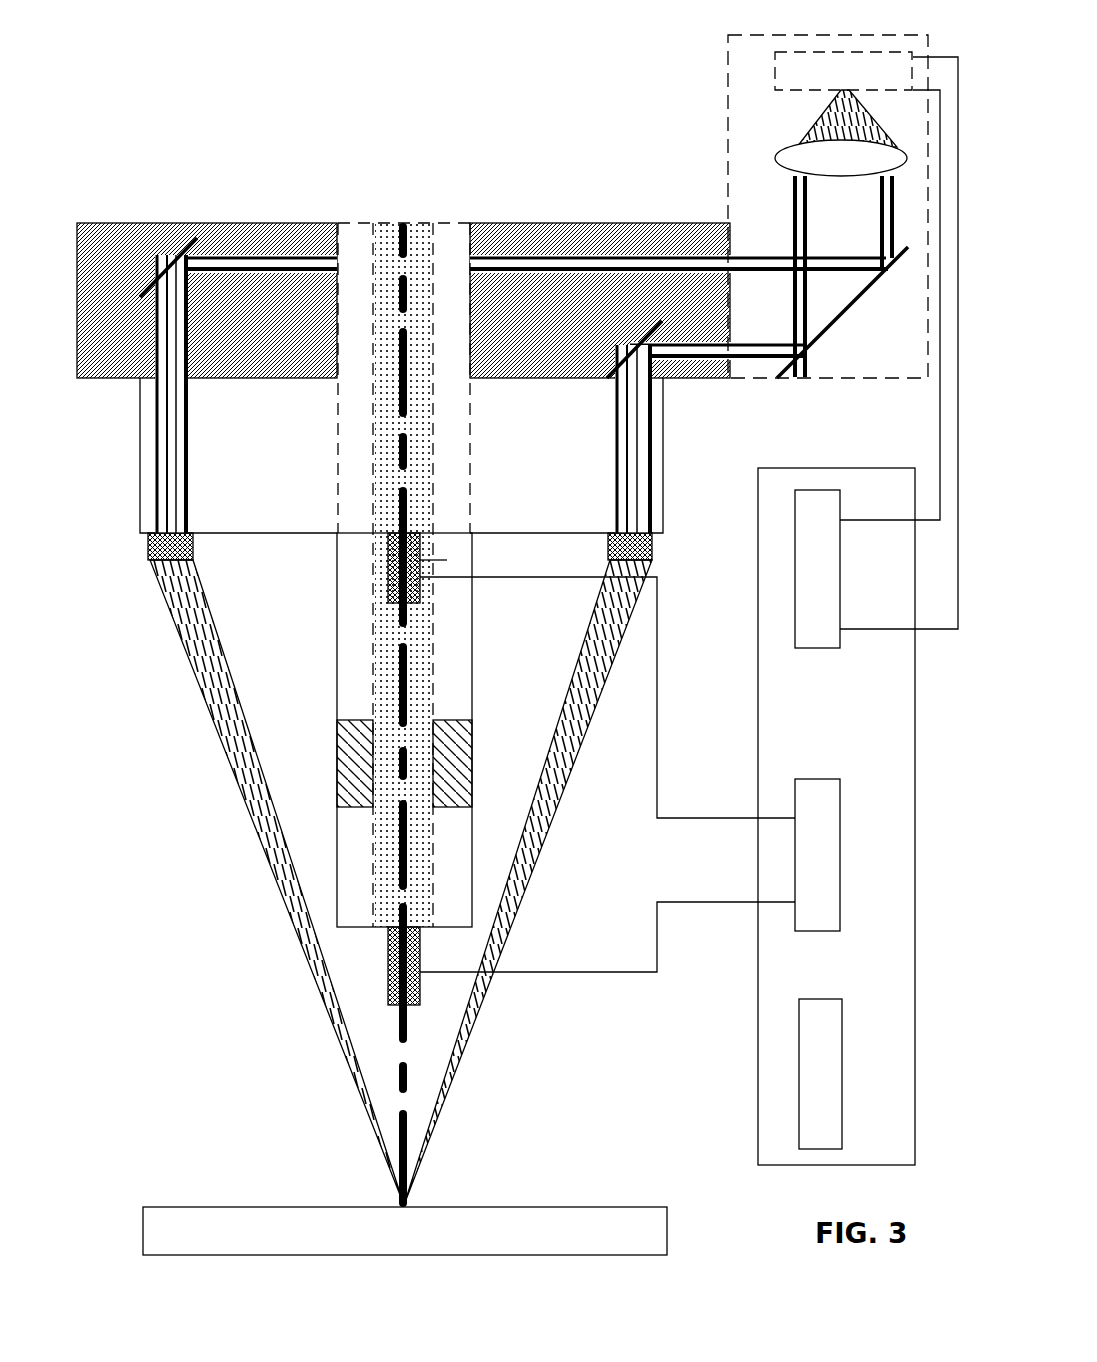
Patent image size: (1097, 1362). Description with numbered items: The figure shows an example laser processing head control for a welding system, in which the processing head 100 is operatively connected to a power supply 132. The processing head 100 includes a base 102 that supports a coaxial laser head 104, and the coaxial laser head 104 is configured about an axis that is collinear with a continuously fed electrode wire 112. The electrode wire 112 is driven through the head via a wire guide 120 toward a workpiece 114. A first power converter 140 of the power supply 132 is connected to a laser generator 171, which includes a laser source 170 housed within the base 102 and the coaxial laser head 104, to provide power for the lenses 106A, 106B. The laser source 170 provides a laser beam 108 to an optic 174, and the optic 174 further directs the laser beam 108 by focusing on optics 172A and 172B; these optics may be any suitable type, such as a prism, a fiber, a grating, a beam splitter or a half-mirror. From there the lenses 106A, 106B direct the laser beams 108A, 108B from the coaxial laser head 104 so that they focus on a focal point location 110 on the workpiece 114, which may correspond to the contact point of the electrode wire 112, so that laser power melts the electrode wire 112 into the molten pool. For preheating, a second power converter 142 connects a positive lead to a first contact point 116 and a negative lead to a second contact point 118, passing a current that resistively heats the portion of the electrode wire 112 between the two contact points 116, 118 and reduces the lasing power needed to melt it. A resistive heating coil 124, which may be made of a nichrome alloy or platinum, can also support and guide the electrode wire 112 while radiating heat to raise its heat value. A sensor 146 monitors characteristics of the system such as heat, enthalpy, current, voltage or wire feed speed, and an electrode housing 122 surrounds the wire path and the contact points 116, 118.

The laser processing head 100 is at (172, 170).
The base 102 is at (680, 378).
The coaxial laser head 104 is at (140, 450).
The lens 106A is at (152, 561).
The lens 106B is at (655, 561).
The laser beam 108 is at (188, 466).
The laser beam 108A is at (222, 735).
The laser beam 108B is at (548, 850).
The focal point location 110 is at (390, 1200).
The electrode wire 112 is at (420, 1053).
The workpiece 114 is at (485, 1207).
The first contact point 116 is at (374, 598).
The second contact point 118 is at (388, 995).
The wire guide 120 is at (374, 582).
The electrode housing 122 is at (472, 645).
The resistive heating coil 124 is at (472, 735).
The power supply 132 is at (790, 468).
The first power converter 140 is at (812, 650).
The second power converter 142 is at (810, 779).
The sensor 146 is at (810, 999).
The laser source 170 is at (843, 99).
The laser generator 171 is at (722, 98).
The optic 172A is at (150, 288).
The optic 172B is at (648, 328).
The optic 174 is at (790, 162).